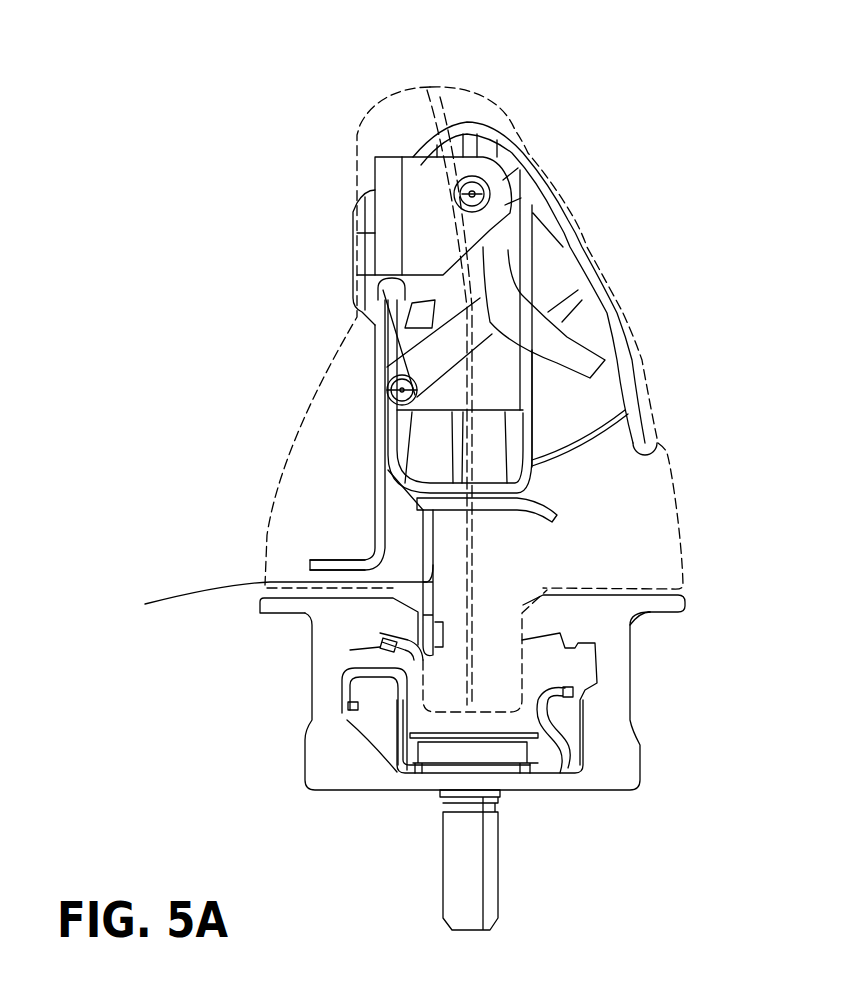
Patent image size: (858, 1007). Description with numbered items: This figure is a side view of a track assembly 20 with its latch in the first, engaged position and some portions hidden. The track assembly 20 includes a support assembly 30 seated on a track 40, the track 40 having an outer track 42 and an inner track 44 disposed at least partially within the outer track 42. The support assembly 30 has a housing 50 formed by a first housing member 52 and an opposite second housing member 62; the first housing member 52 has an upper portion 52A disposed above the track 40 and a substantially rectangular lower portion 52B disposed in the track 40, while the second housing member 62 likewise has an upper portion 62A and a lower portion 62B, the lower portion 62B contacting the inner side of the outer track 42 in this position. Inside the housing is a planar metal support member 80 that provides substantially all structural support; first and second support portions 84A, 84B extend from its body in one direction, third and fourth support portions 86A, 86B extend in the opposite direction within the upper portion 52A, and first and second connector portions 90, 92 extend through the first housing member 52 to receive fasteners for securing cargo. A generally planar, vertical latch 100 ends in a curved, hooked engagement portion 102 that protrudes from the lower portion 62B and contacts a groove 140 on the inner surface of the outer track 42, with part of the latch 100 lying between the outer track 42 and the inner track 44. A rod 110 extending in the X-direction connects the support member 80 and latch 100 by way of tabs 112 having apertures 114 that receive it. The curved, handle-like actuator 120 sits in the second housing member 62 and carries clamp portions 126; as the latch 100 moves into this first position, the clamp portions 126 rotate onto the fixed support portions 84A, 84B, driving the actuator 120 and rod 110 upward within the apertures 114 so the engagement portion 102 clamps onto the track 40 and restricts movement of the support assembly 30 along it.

The track assembly 20 is at (471, 512).
The support assembly 30 is at (471, 375).
The track 40 is at (539, 769).
The outer track 42 is at (673, 608).
The inner track 44 is at (563, 753).
The housing 50 is at (404, 371).
The first housing member 52 is at (544, 610).
The upper portion 52A is at (690, 577).
The lower portion 52B is at (528, 662).
The second housing member 62 is at (404, 396).
The upper portion 62A is at (280, 460).
The lower portion 62B is at (423, 707).
The support member 80 is at (378, 408).
The first support portion 84A is at (619, 501).
The second support portion 84B is at (553, 507).
The third support portion 86A is at (228, 541).
The fourth support portion 86B is at (333, 563).
The first connector portion 90 is at (369, 241).
The second connector portion 92 is at (352, 236).
The latch 100 is at (272, 583).
The engagement portion 102 is at (380, 642).
The rod 110 is at (543, 153).
The tabs 112 is at (485, 223).
The apertures 114 is at (488, 212).
The actuator 120 is at (641, 372).
The clamp portions 126 is at (534, 480).
The groove 140 is at (365, 627).